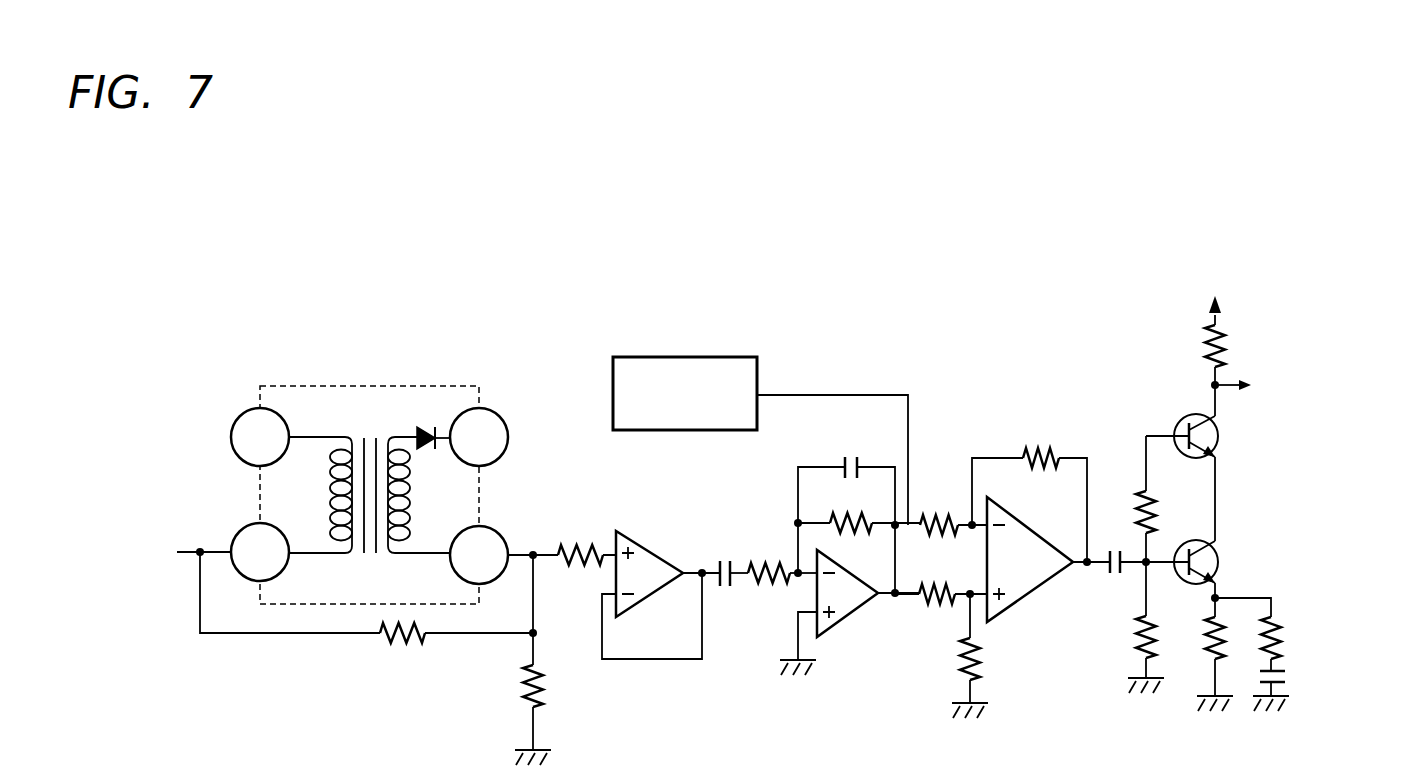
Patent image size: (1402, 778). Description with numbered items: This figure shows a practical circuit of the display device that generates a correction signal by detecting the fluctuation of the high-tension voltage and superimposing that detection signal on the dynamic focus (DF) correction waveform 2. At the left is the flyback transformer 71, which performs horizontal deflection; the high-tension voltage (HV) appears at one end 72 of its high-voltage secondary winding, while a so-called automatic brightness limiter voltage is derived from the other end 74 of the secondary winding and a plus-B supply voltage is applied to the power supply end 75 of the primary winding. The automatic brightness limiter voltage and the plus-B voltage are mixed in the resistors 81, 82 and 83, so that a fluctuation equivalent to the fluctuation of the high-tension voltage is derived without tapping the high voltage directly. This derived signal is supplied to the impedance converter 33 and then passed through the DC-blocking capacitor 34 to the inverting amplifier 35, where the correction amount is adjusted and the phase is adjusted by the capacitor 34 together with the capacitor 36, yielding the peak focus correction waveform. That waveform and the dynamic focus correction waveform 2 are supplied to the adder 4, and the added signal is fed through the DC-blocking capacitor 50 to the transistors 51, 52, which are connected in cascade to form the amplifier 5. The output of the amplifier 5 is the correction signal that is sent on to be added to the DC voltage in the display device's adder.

The dynamic focus (DF) correction waveform 2 is at (758, 372).
The adder 4 is at (1022, 600).
The amplifier 5 is at (1259, 492).
The impedance converter 33 is at (662, 550).
The DC-blocking capacitor 34 is at (724, 589).
The inverting amplifier 35 is at (843, 621).
The capacitor 36 is at (852, 455).
The DC-blocking capacitor 50 is at (1113, 576).
The transistor 51 is at (1220, 563).
The transistor 52 is at (1220, 437).
The flyback transformer 71 is at (294, 385).
The one end of high-voltage secondary winding 72 is at (500, 416).
The other end of secondary winding 74 is at (500, 534).
The power supply end of primary winding 75 is at (239, 530).
The resistor 81 is at (396, 650).
The resistor 82 is at (511, 687).
The resistor 83 is at (583, 537).